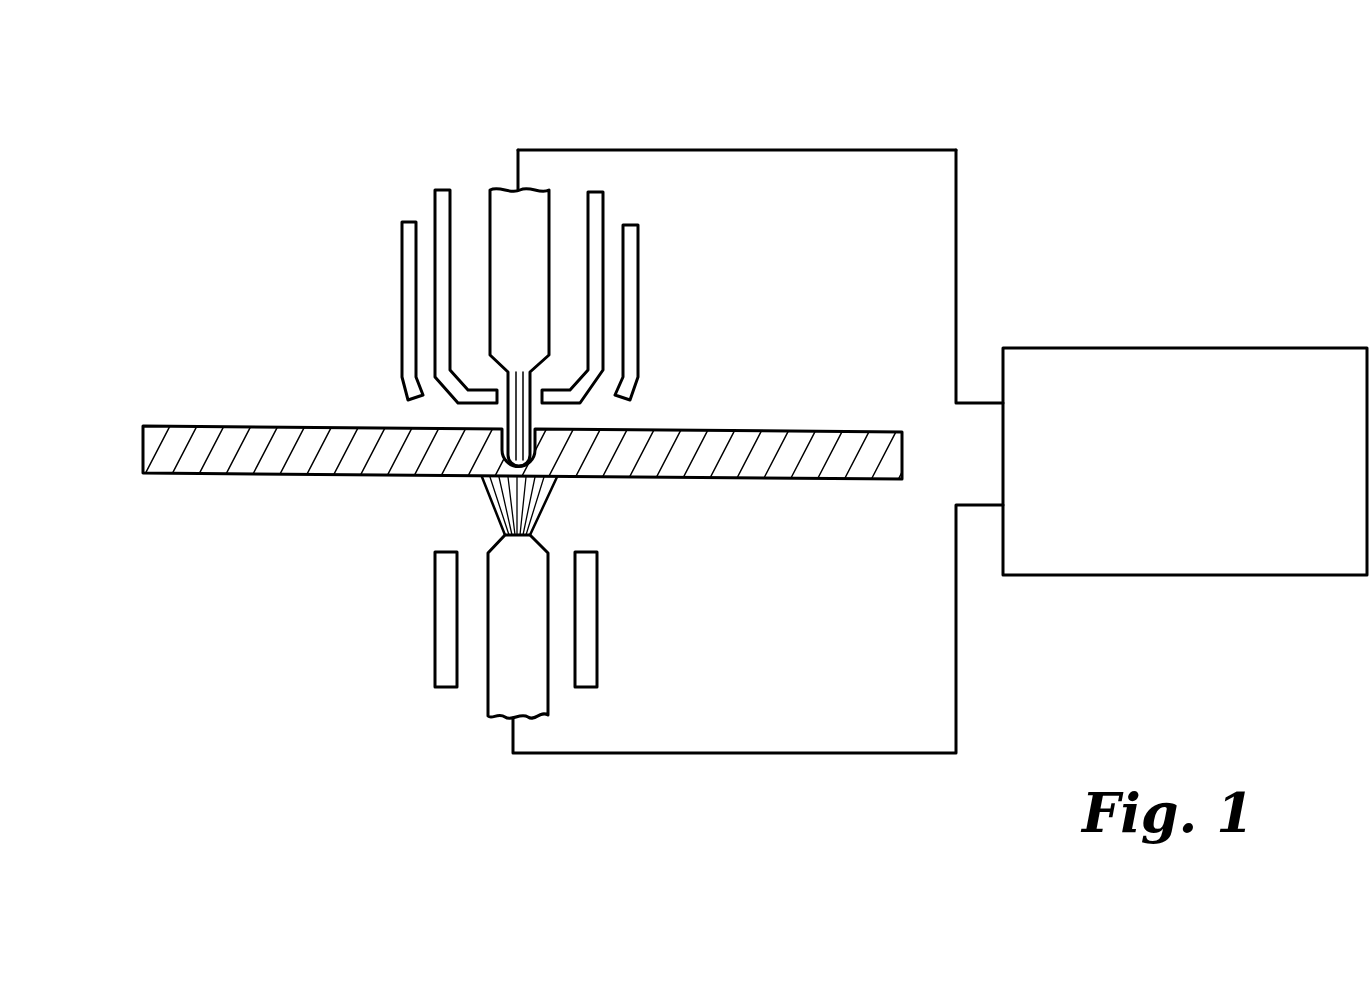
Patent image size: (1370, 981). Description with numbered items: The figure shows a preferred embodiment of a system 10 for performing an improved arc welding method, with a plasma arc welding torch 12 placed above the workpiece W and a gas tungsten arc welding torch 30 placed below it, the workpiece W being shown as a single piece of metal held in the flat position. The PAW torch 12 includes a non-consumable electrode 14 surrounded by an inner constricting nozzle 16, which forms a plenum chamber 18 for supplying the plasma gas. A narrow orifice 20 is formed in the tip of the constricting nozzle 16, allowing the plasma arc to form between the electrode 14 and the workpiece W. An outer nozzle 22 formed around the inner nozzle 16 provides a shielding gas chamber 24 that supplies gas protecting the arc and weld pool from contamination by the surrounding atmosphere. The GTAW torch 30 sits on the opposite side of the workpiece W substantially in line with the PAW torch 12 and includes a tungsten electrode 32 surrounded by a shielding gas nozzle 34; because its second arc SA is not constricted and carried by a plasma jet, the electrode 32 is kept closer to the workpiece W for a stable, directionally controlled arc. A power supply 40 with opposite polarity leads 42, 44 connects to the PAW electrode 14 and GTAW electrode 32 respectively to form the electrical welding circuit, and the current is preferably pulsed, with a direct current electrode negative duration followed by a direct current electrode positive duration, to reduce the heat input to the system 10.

The system 10 is at (804, 387).
The plasma arc welding torch 12 is at (515, 128).
The non-consumable electrode 14 is at (414, 266).
The inner constricting nozzle 16 is at (384, 248).
The plenum chamber 18 is at (567, 252).
The narrow orifice 20 is at (500, 415).
The outer nozzle 22 is at (408, 275).
The shielding gas chamber 24 is at (428, 230).
The gas tungsten arc welding torch 30 is at (528, 713).
The tungsten electrode 32 is at (497, 695).
The shielding gas nozzle 34 is at (588, 643).
The power supply 40 is at (1085, 348).
The lead 42 is at (958, 220).
The lead 44 is at (955, 657).
The workpiece W is at (197, 452).
The second arc SA is at (533, 500).